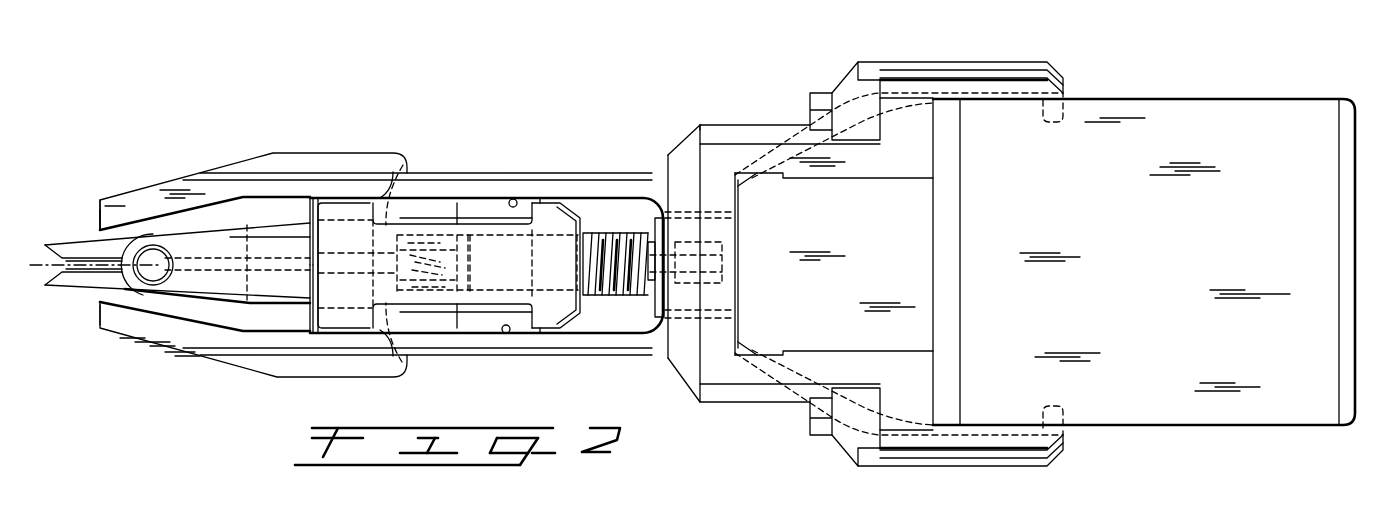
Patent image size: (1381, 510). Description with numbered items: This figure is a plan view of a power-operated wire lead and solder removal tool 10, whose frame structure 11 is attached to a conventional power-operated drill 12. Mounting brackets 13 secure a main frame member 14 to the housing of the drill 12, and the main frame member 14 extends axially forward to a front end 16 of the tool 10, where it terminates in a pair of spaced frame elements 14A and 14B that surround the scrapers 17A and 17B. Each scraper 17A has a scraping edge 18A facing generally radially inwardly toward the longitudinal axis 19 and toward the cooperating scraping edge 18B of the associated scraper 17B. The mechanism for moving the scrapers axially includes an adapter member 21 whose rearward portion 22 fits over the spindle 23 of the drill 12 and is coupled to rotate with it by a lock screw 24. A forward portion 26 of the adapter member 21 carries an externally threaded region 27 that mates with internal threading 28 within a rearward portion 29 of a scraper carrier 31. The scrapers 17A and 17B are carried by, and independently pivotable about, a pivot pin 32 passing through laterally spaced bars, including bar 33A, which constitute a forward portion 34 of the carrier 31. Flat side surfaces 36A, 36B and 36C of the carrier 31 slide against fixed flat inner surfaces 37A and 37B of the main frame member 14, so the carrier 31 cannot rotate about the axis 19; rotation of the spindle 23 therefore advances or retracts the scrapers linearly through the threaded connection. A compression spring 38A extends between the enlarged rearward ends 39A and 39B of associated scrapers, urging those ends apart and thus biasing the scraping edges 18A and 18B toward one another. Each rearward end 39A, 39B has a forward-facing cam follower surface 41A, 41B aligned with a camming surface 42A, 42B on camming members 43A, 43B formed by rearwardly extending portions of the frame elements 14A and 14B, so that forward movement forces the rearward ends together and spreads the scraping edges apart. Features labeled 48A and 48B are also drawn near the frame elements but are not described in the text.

The wire lead and solder removal tool 10 is at (1125, 501).
The frame structure 11 is at (719, 82).
The power-operated drill 12 is at (1190, 113).
The mounting brackets 13 is at (940, 87).
The main frame member 14 is at (720, 160).
The frame element 14A is at (101, 214).
The frame element 14B is at (108, 333).
The front end 16 is at (98, 159).
The scraper 17A is at (310, 222).
The scraper 17B is at (312, 320).
The scraping edge 18A is at (64, 254).
The scraping edge 18B is at (64, 273).
The longitudinal axis 19 is at (44, 267).
The adapter member 21 is at (657, 205).
The rearward portion 22 is at (718, 232).
The spindle 23 is at (716, 282).
The lock screw 24 is at (658, 310).
The forward portion 26 is at (598, 292).
The externally threaded region 27 is at (588, 236).
The internal threading 28 is at (528, 235).
The rearward portion 29 is at (548, 195).
The scraper carrier 31 is at (385, 243).
The pivot pin 32 is at (160, 263).
The bar 33A is at (254, 243).
The forward portion 34 is at (163, 282).
The flat side surface 36A is at (360, 200).
The flat side surface 36B is at (548, 205).
The flat side surface 36C is at (346, 335).
The inner surface 37A is at (516, 200).
The inner surface 37B is at (507, 335).
The compression spring 38A is at (466, 271).
The rearward end 39A is at (450, 206).
The rearward end 39B is at (450, 323).
The cam follower surface 41A is at (403, 165).
The cam follower surface 41B is at (402, 362).
The camming surface 42A is at (380, 228).
The camming surface 42B is at (455, 324).
The camming member 43A is at (363, 165).
The camming member 43B is at (398, 358).
The upper recess 48A is at (100, 222).
The lower recess 48B is at (100, 325).